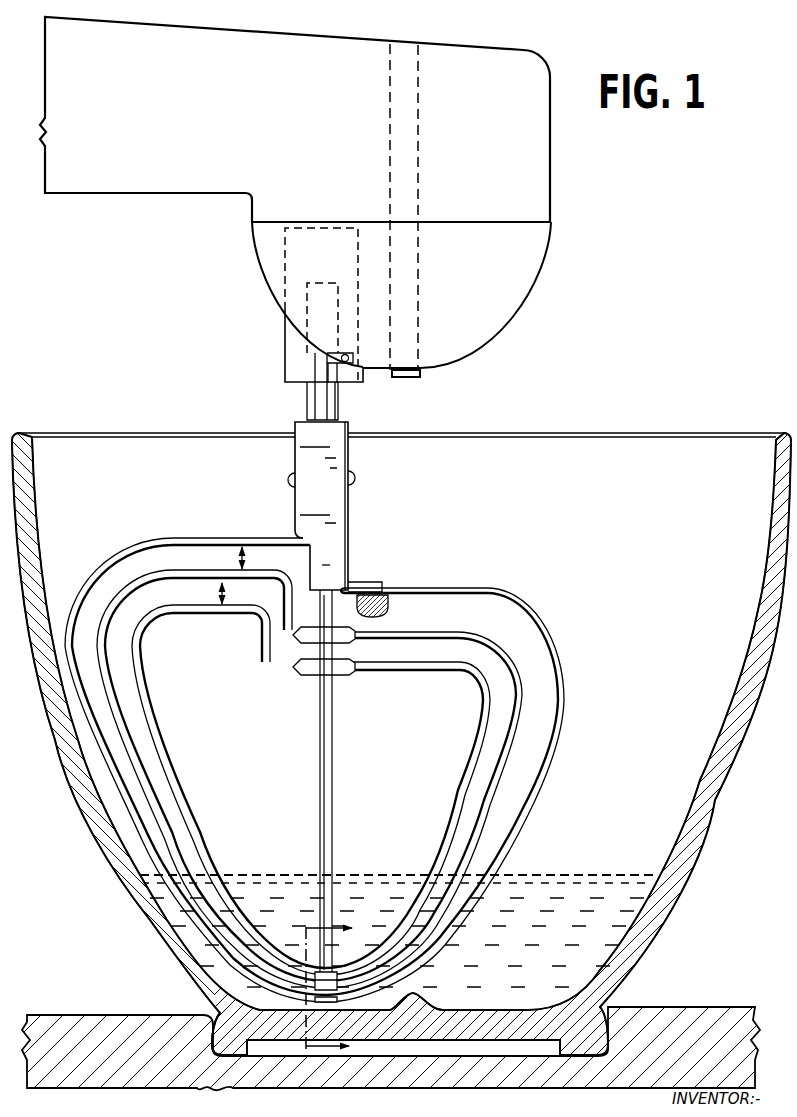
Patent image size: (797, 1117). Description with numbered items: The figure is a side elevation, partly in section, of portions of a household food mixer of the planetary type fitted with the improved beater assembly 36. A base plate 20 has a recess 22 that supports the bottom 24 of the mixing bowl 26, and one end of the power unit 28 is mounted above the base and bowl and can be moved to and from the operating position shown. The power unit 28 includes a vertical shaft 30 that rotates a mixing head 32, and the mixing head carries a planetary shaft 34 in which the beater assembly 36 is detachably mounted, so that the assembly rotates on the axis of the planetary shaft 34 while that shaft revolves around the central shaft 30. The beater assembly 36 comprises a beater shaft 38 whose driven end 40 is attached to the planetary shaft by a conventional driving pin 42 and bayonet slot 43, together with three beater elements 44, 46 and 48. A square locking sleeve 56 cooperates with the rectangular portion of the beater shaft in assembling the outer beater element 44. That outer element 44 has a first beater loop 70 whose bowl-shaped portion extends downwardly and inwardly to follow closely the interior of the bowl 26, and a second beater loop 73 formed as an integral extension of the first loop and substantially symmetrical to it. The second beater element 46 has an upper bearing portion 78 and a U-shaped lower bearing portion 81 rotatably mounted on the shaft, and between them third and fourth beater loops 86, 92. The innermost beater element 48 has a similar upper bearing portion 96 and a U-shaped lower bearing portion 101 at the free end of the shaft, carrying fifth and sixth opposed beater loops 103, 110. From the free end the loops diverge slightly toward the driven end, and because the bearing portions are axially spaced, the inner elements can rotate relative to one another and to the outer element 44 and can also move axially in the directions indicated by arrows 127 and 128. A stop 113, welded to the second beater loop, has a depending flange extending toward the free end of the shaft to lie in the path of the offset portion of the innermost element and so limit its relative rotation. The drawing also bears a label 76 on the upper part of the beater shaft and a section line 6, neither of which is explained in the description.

The base plate 20 is at (162, 1067).
The recess 22 is at (274, 1042).
The bottom of mixing bowl 24 is at (227, 1044).
The mixing bowl 26 is at (137, 880).
The power unit 28 is at (190, 195).
The vertical shaft 30 is at (420, 73).
The mixing head 32 is at (520, 282).
The planetary shaft 34 is at (285, 321).
The beater assembly 36 is at (423, 500).
The beater shaft 38 is at (304, 407).
The driven end 40 is at (317, 395).
The driving pin 42 is at (341, 366).
The bayonet slot 43 is at (336, 368).
The first beater element 44 is at (467, 778).
The second beater element 46 is at (413, 625).
The third beater element 48 is at (463, 676).
The locking sleeve 56 is at (331, 567).
The first beater loop 70 is at (190, 770).
The second beater loop 73 is at (566, 727).
The trunnion pin 76 is at (354, 478).
The upper bearing portion 78 is at (349, 641).
The lower bearing portion 81 is at (308, 972).
The third beater loop 86 is at (126, 713).
The fourth beater loop 92 is at (454, 794).
The upper bearing portion 96 is at (341, 676).
The lower bearing portion 101 is at (338, 973).
The fifth beater loop 103 is at (207, 743).
The sixth beater loop 110 is at (408, 818).
The stop 113 is at (367, 578).
The arrow 127 is at (241, 560).
The arrow 128 is at (221, 596).
The section line 6- 6 is at (324, 989).